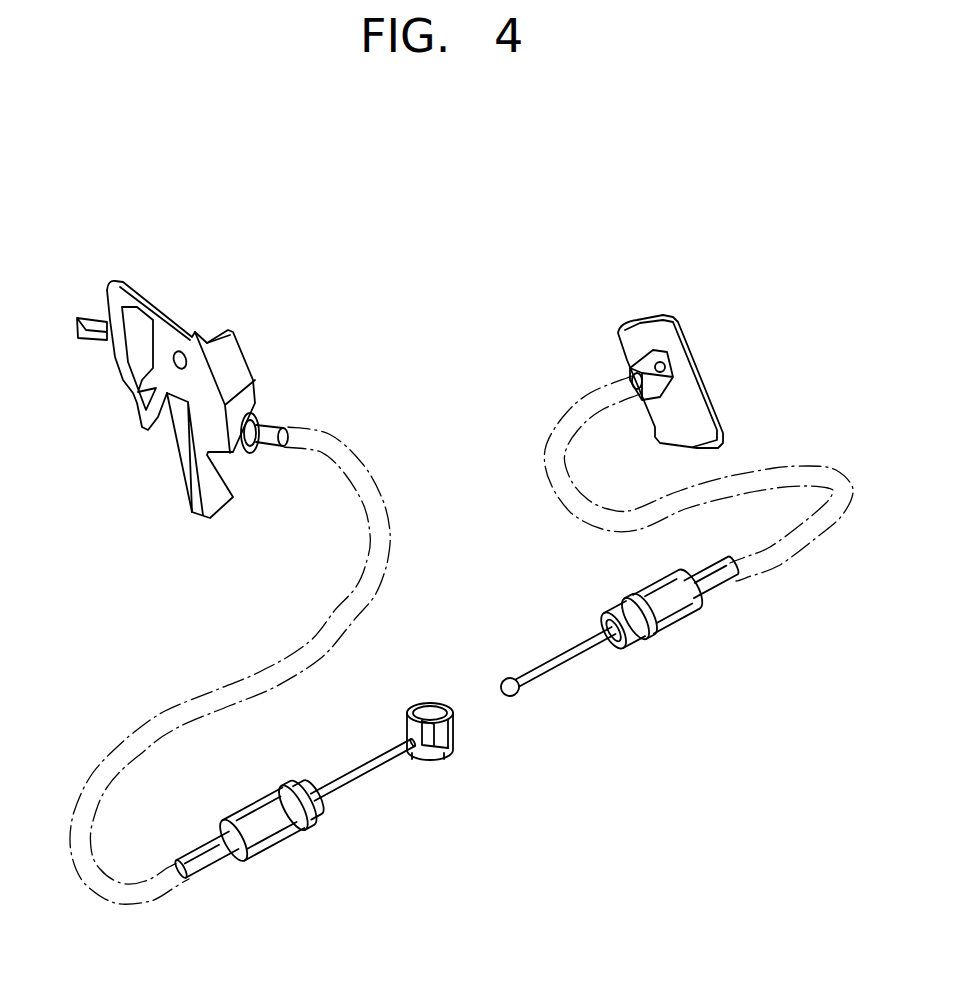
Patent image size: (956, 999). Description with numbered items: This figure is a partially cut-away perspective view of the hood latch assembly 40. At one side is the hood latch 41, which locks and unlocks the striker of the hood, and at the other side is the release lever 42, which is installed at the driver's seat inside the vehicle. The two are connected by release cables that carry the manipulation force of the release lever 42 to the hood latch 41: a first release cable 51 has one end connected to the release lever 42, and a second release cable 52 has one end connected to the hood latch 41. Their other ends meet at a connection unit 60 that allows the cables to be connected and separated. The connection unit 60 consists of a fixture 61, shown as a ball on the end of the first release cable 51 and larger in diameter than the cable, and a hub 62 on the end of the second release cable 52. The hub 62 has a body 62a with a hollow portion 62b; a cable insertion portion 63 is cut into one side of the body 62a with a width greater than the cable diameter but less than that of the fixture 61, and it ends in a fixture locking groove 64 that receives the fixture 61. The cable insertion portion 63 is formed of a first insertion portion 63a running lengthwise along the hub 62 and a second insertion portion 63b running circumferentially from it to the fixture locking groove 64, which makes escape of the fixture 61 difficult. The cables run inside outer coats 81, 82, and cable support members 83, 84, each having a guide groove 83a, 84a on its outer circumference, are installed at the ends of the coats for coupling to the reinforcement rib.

The hood latch assembly 40 is at (447, 472).
The hood latch 41 is at (212, 285).
The release lever 42 is at (702, 330).
The first release cable 51 is at (557, 663).
The second release cable 52 is at (339, 780).
The connection unit 60 is at (492, 770).
The fixture 61 is at (513, 690).
The hub 62 is at (423, 736).
The body 62a is at (450, 703).
The hollow portion 62b is at (423, 707).
The cable insertion portion 63 is at (441, 833).
The first insertion portion 63a is at (408, 763).
The second insertion portion 63b is at (437, 767).
The fixture locking groove 64 is at (453, 733).
The outer coat 81 is at (708, 593).
The outer coat 82 is at (198, 852).
The cable support member 83 is at (653, 590).
The guide groove 83a is at (643, 625).
The cable support member 84 is at (278, 838).
The guide groove 84a is at (300, 835).